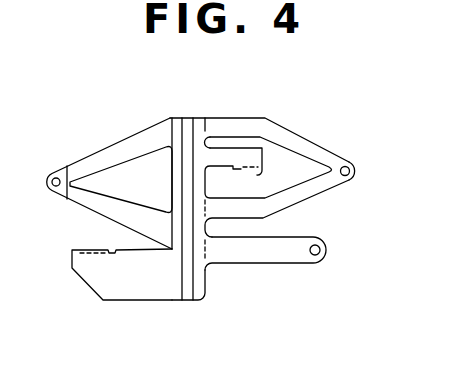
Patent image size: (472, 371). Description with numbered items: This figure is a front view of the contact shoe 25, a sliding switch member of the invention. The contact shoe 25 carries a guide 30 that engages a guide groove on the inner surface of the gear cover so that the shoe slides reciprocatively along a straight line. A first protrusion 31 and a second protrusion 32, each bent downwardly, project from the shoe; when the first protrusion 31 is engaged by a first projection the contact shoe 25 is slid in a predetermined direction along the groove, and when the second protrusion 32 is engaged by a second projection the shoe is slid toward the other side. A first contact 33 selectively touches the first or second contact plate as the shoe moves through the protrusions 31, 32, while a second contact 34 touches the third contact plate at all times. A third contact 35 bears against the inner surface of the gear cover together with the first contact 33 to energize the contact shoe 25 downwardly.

The contact shoe 25 is at (198, 119).
The guide 30 is at (207, 281).
The first protrusion 31 is at (83, 248).
The second protrusion 32 is at (266, 173).
The first contact 33 is at (351, 161).
The second contact 34 is at (313, 263).
The third contact 35 is at (100, 151).